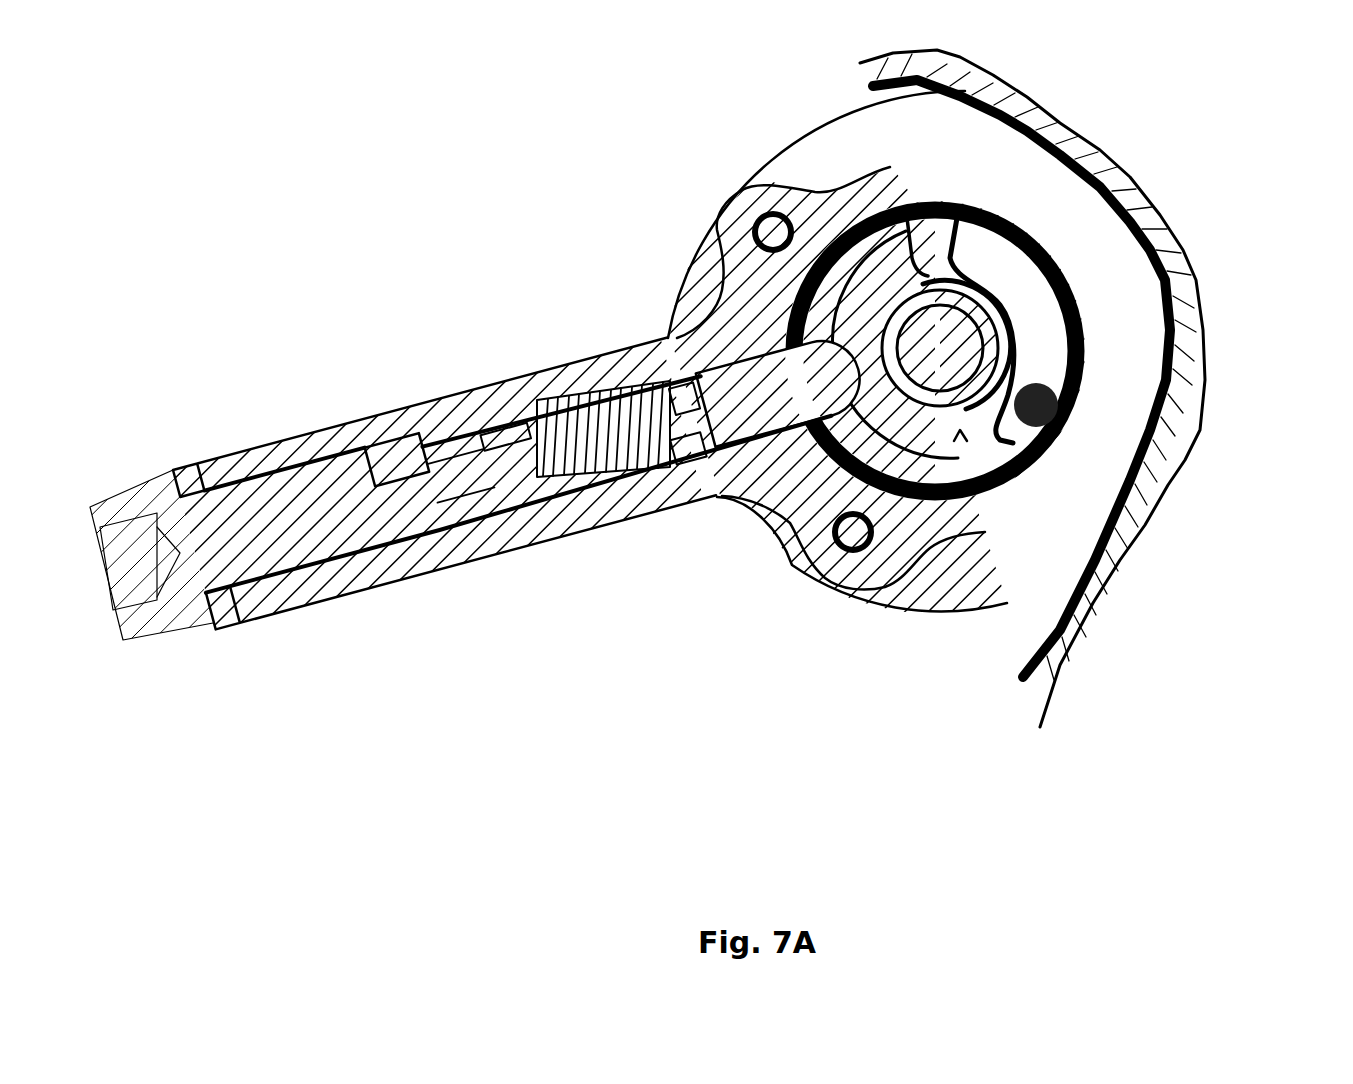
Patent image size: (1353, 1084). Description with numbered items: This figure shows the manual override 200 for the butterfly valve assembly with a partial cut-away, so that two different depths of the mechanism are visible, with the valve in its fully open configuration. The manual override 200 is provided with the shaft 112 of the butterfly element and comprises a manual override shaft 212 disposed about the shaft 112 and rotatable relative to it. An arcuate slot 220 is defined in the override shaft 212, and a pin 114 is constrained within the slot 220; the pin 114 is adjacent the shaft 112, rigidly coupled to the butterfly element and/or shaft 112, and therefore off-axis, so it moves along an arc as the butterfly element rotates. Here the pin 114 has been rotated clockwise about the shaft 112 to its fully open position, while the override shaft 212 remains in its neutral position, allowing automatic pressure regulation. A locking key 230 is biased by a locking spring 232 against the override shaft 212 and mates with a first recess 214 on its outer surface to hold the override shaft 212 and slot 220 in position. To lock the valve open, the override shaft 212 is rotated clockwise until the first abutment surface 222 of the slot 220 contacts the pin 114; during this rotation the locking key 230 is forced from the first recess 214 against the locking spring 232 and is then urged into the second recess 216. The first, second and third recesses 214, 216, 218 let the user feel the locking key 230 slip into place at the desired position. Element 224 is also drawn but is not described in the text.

The manual override 200 is at (441, 148).
The shaft 112 is at (938, 352).
The pin 114 is at (1047, 469).
The manual override shaft 212 is at (867, 318).
The first recess 214 is at (827, 417).
The second recess 216 is at (960, 435).
The third recess 218 is at (910, 263).
The arcuate slot 220 is at (1033, 310).
The first abutment surface 222 is at (965, 242).
The pin 224 is at (1014, 436).
The locking key 230 is at (745, 407).
The locking spring 232 is at (590, 440).